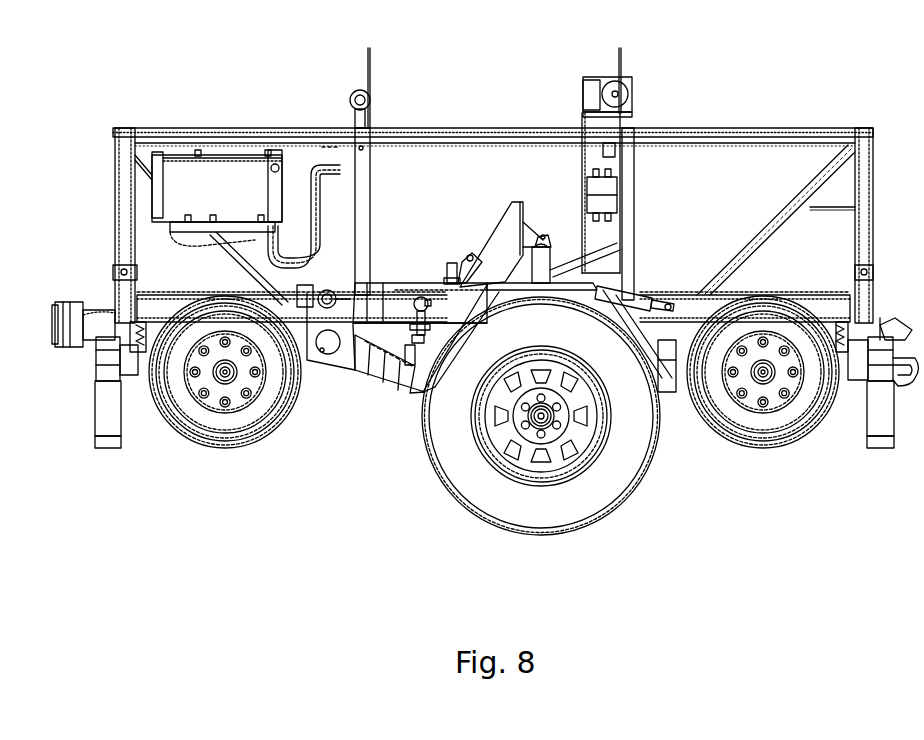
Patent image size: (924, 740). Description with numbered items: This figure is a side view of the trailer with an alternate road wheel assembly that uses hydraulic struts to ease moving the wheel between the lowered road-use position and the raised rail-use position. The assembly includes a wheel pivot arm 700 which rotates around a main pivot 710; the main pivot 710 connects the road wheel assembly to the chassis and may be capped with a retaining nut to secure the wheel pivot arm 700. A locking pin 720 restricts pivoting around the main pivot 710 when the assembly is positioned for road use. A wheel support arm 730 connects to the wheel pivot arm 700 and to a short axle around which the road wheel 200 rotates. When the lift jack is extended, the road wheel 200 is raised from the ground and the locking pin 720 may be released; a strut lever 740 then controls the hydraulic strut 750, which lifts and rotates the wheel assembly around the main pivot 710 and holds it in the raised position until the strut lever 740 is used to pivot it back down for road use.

The road wheel 200 is at (627, 478).
The wheel pivot arm 700 is at (402, 310).
The main pivot 710 is at (325, 300).
The locking pin 720 is at (421, 297).
The wheel support arm 730 is at (383, 367).
The strut lever 740 is at (666, 302).
The hydraulic strut 750 is at (628, 287).